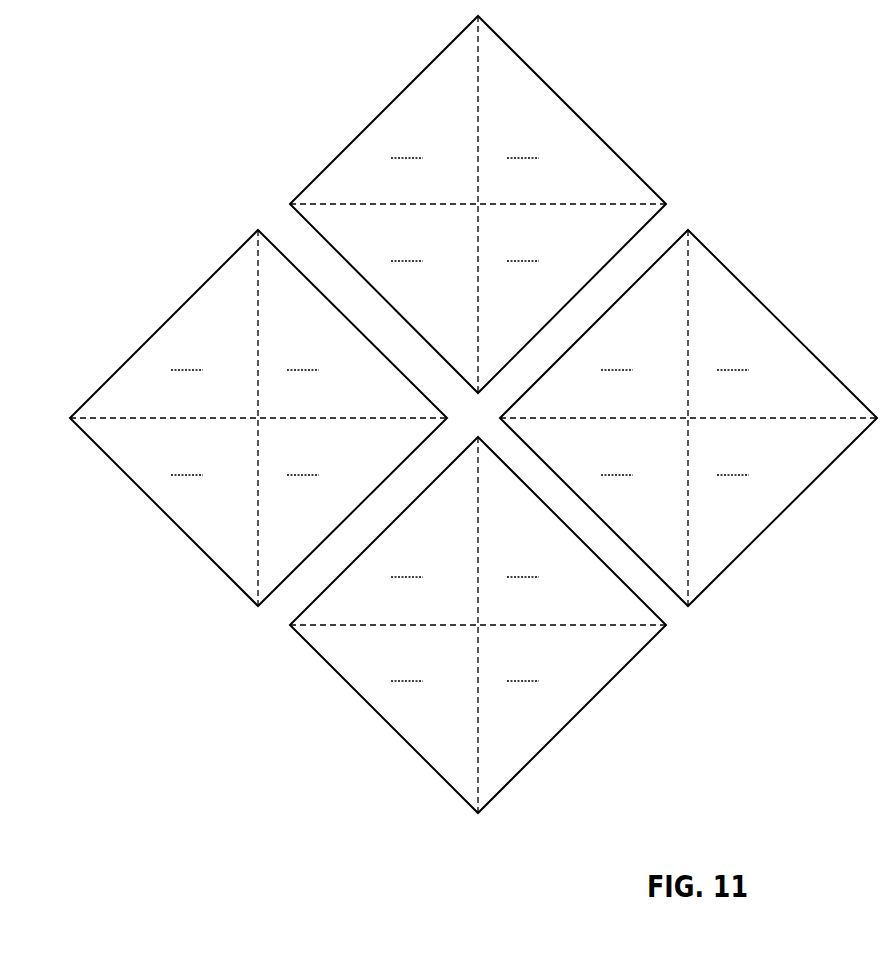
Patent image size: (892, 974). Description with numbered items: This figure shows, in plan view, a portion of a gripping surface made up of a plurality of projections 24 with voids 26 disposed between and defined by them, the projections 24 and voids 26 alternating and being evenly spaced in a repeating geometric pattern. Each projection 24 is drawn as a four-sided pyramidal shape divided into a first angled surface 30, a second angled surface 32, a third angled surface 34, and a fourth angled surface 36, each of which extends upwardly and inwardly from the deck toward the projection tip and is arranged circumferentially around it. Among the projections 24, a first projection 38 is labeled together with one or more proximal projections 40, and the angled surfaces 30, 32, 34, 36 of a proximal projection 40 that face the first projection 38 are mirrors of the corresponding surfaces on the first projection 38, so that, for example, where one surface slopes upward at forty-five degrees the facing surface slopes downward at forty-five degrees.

The projections 24 is at (473, 409).
The voids 26 is at (283, 233).
The first angled surface 30 is at (460, 405).
The second angled surface 32 is at (460, 405).
The third angled surface 34 is at (460, 406).
The fourth angled surface 36 is at (460, 406).
The first projection 38 is at (187, 322).
The proximal projections 40 is at (403, 107).